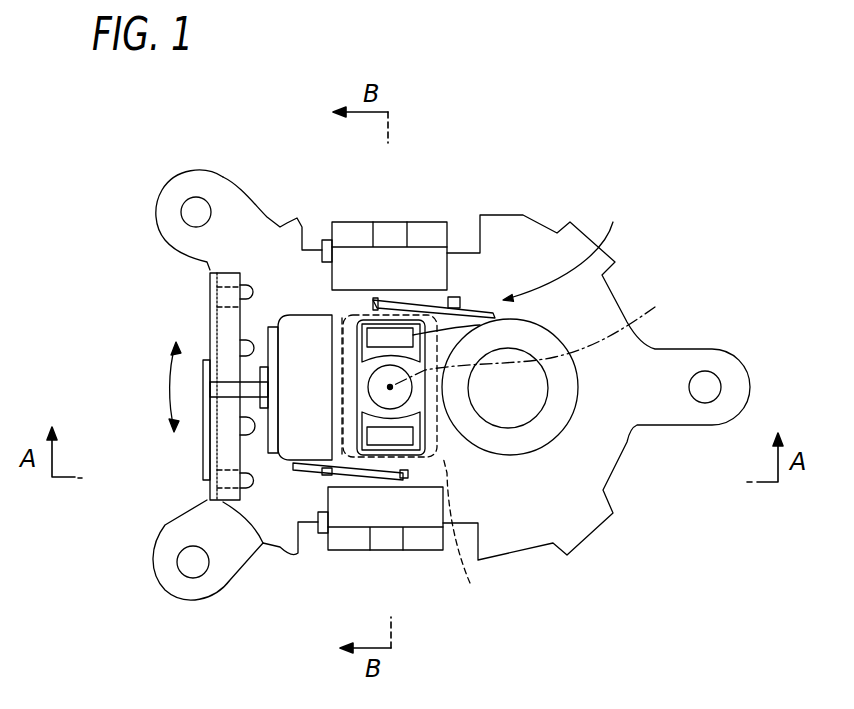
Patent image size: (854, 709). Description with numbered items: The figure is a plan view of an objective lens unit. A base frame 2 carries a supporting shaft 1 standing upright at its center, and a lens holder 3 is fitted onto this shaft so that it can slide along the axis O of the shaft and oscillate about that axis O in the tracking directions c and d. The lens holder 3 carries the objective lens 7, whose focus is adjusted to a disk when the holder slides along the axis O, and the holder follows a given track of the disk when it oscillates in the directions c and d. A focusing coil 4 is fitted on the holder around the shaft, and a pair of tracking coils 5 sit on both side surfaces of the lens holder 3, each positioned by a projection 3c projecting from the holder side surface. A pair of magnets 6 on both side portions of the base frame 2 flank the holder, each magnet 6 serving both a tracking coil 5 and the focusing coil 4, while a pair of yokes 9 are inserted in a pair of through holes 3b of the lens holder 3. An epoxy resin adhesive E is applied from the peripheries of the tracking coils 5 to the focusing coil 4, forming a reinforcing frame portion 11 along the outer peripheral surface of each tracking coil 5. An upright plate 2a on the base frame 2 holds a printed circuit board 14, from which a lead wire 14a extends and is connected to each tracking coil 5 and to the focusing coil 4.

The supporting shaft 1 is at (388, 386).
The base frame 2 is at (522, 228).
The upright plate 2a is at (213, 267).
The lens holder 3 is at (462, 455).
The through holes 3b is at (340, 317).
The projections 3c is at (455, 296).
The focusing coil 4 is at (469, 527).
The tracking coils 5 is at (496, 310).
The magnets 6 is at (392, 263).
The objective lens 7 is at (548, 392).
The yokes 9 is at (440, 363).
The reinforcing frame portions 11 is at (371, 298).
The printed circuit board 14 is at (207, 455).
The lead wire 14a is at (243, 383).
The epoxy resin adhesive E is at (563, 251).
The axis O is at (532, 340).
The tracking direction c is at (164, 385).
The tracking direction d is at (163, 429).